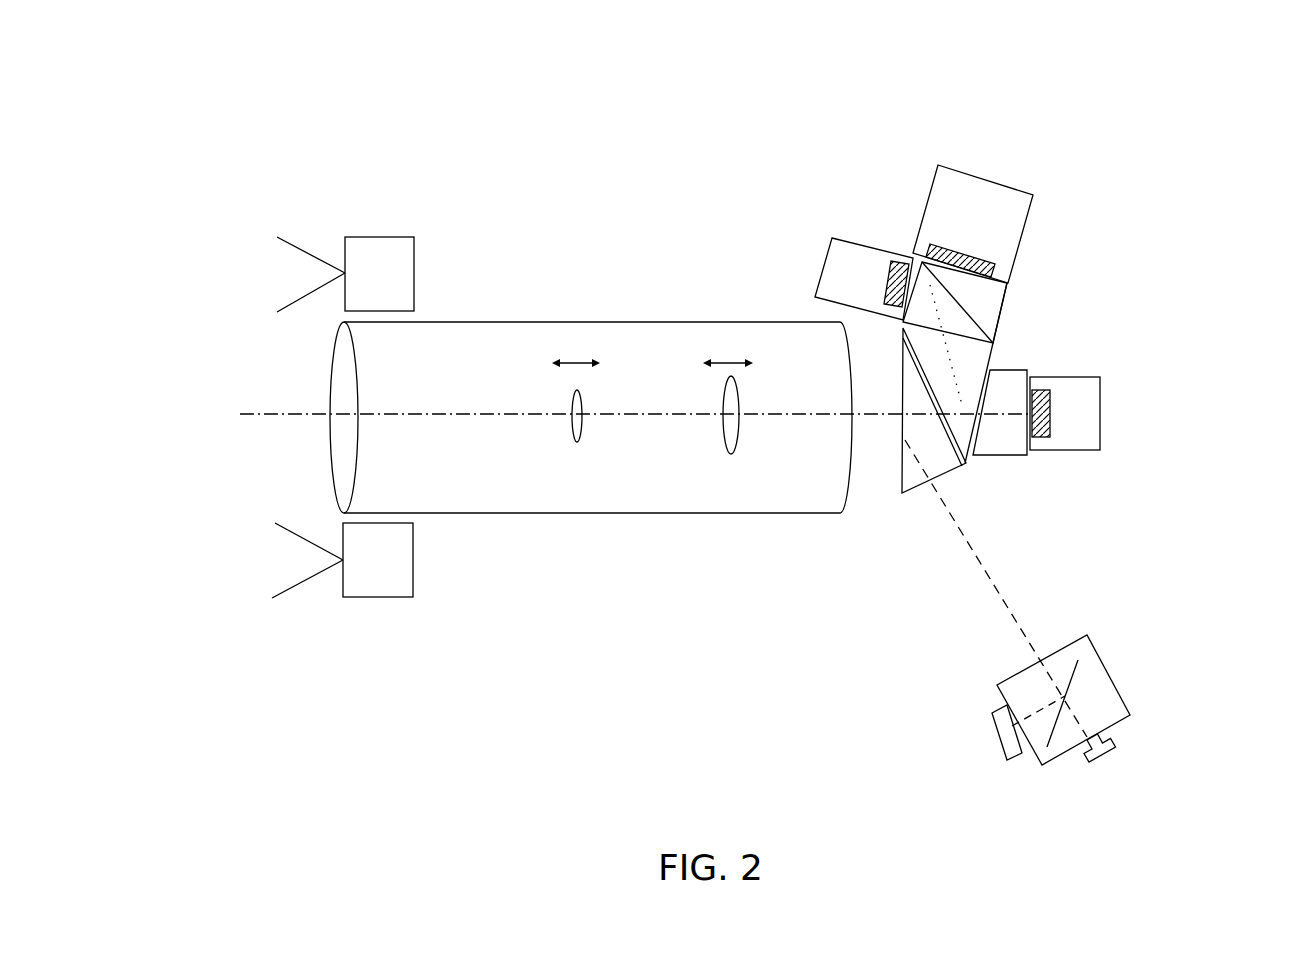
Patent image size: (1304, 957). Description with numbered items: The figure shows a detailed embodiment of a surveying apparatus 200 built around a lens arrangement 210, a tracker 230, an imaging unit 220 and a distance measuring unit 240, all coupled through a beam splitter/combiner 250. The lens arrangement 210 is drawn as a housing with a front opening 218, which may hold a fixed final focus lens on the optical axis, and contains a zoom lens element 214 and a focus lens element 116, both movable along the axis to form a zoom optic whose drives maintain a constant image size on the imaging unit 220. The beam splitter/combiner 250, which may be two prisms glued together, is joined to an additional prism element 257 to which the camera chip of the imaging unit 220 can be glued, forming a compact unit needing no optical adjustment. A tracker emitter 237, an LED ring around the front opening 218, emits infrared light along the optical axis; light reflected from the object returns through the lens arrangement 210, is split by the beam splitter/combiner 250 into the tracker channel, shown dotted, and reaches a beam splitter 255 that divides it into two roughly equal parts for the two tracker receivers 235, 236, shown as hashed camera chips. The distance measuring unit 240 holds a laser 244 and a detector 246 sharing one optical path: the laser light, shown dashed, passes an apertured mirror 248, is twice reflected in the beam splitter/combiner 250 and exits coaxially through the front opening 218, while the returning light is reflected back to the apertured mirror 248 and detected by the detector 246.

The surveying apparatus 200 is at (648, 106).
The lens arrangement 210 is at (619, 323).
The front opening 218 is at (330, 383).
The zoom lens element 214 is at (577, 442).
The focus lens element 116 is at (731, 454).
The tracker emitter 237 is at (414, 257).
The tracker 230 is at (907, 190).
The tracker receiver 235 is at (834, 236).
The tracker receiver 236 is at (1035, 197).
The beam splitter 255 is at (1003, 302).
The beam splitter/combiner 250 is at (993, 353).
The additional prism element 257 is at (1010, 455).
The imaging unit 220 is at (1100, 418).
The distance measuring unit 240 is at (1112, 685).
The apertured mirror 248 is at (1078, 660).
The detector 246 is at (1005, 745).
The laser 244 is at (1110, 760).